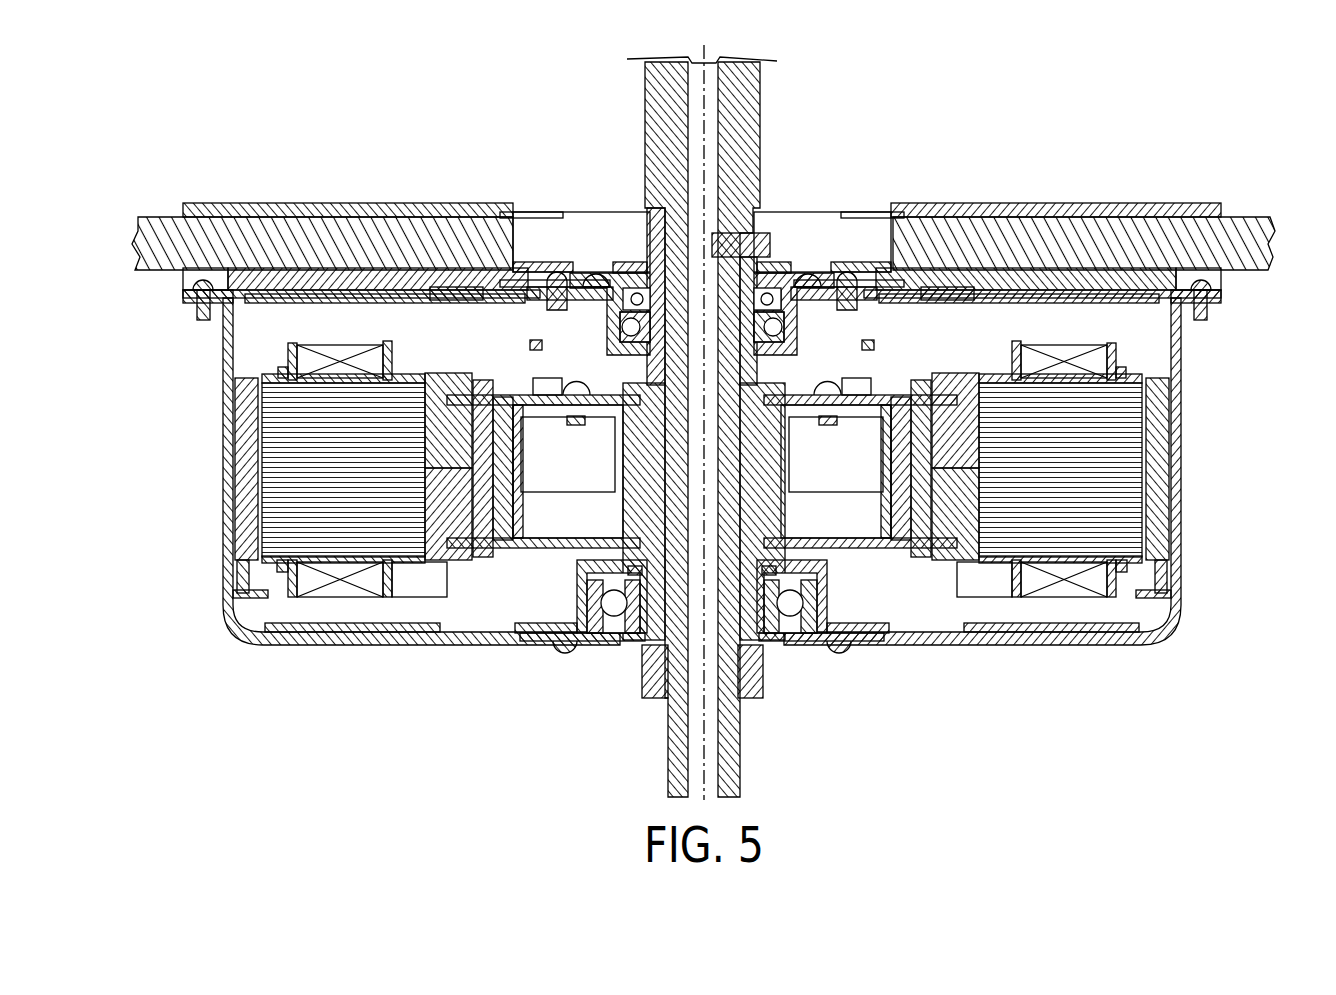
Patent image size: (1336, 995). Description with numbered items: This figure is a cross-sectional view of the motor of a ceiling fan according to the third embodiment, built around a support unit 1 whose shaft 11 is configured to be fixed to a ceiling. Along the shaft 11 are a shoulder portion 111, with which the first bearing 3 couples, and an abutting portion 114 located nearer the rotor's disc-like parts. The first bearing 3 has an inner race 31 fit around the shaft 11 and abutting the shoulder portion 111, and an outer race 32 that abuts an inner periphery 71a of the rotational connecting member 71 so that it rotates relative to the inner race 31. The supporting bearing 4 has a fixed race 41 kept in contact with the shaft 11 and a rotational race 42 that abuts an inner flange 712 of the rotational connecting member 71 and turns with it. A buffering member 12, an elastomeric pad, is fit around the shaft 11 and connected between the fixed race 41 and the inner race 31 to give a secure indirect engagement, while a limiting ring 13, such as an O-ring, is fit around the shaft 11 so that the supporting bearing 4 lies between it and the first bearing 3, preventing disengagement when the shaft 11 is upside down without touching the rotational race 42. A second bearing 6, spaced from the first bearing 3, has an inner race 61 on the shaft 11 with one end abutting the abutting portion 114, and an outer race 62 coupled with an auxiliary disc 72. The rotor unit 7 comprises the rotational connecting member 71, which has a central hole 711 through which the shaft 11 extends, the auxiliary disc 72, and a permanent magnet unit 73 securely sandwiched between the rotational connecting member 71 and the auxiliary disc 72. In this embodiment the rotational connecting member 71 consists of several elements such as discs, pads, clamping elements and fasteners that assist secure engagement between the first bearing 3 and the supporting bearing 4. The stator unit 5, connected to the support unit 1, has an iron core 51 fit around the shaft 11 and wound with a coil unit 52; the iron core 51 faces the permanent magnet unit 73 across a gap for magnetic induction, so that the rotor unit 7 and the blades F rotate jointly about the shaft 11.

The support unit 1 is at (707, 422).
The shaft 11 is at (707, 439).
The shoulder portion 111 is at (765, 367).
The abutting portion 114 is at (557, 547).
The buffering member 12 is at (782, 300).
The limiting ring 13 is at (765, 258).
The first bearing 3 is at (539, 228).
The inner race 31 is at (535, 347).
The outer race 32 is at (607, 345).
The supporting bearing 4 is at (642, 209).
The fixed race 41 is at (600, 290).
The rotational race 42 is at (628, 316).
The stator unit 5 is at (767, 470).
The iron core 51 is at (1130, 525).
The coil unit 52 is at (1090, 587).
The second bearing 6 is at (678, 651).
The inner race 61 is at (635, 631).
The outer race 62 is at (560, 633).
The rotor unit 7 is at (669, 436).
The rotational connecting member 71 is at (702, 245).
The central hole 711 is at (800, 268).
The inner flange 712 is at (620, 262).
The inner periphery 71a is at (885, 300).
The auxiliary disc 72 is at (228, 352).
The permanent magnet unit 73 is at (250, 462).
The blades F is at (243, 230).